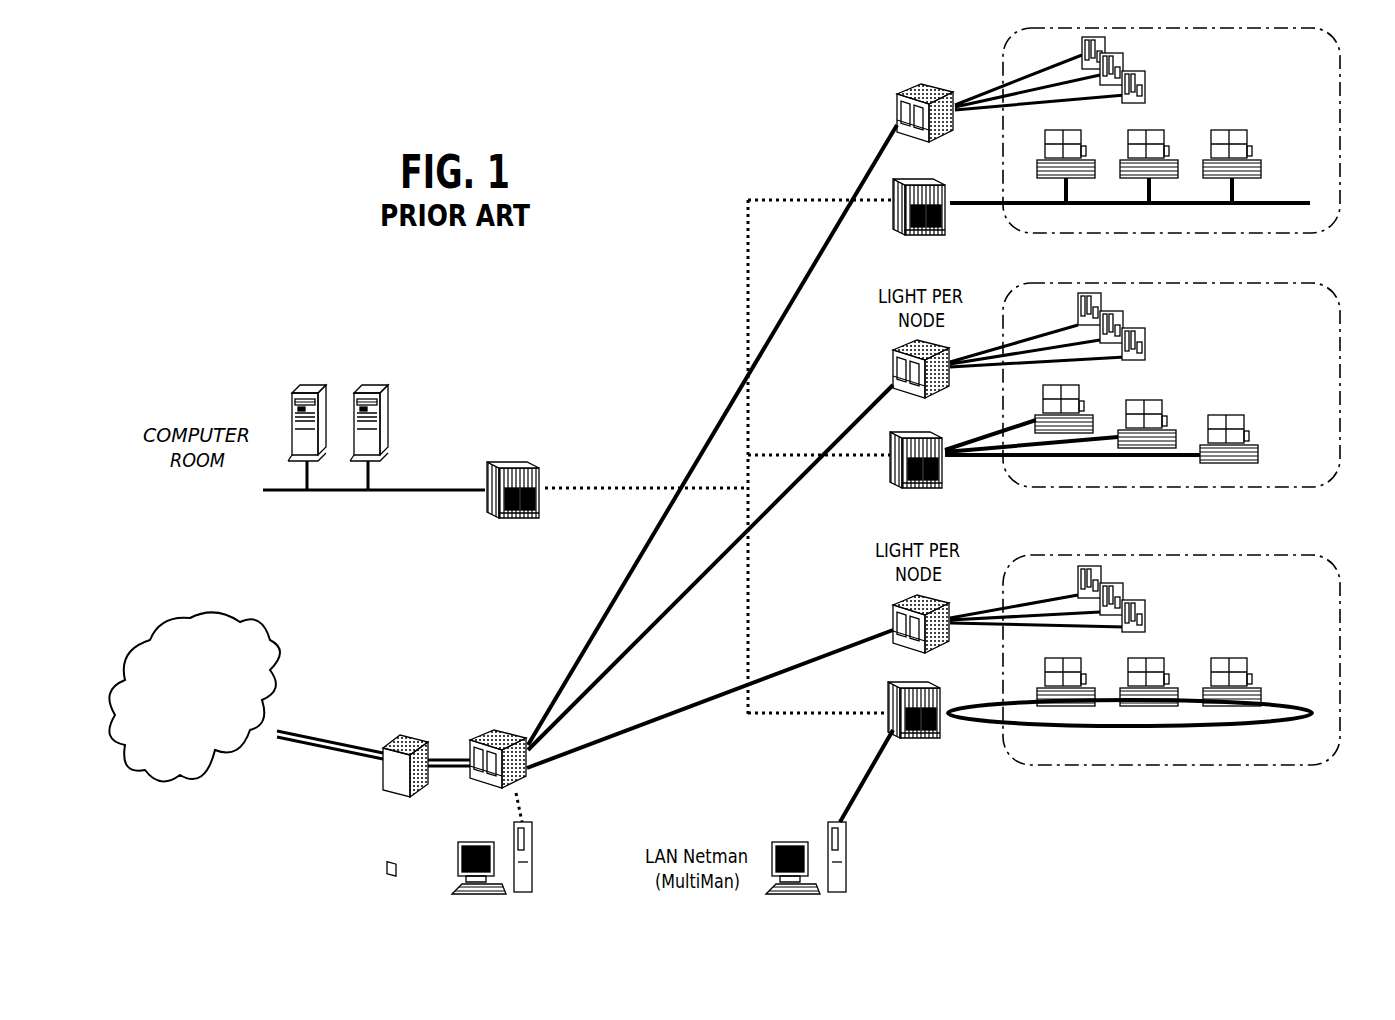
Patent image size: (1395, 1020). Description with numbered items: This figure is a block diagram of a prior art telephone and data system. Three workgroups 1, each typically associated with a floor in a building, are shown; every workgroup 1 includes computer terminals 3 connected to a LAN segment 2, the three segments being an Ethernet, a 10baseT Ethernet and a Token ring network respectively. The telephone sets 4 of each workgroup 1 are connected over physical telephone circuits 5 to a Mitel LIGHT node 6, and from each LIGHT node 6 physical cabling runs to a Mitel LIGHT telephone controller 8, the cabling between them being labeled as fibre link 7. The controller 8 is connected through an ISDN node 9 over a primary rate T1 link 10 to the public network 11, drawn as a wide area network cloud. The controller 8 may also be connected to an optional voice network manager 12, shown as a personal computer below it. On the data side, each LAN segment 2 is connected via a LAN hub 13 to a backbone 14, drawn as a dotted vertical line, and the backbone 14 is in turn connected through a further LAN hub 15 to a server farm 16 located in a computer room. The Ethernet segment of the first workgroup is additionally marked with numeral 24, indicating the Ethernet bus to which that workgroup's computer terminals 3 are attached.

The workgroup 1 is at (1340, 100).
The LAN segment 2 is at (968, 458).
The computer terminal 3 is at (1250, 135).
The telephone set 4 is at (1145, 82).
The physical telephone circuit 5 is at (975, 110).
The LIGHT node 6 is at (897, 100).
The fibre link (16 Mbs) 7 is at (697, 462).
The LIGHT telephone controller 8 is at (488, 778).
The ISDN node 9 is at (385, 782).
The primary rate T1 link 10 is at (307, 732).
The public network 11 is at (210, 635).
The voice network manager 12 is at (525, 860).
The LAN hub 13 is at (893, 195).
The backbone 14 is at (748, 355).
The LAN hub 15 is at (512, 460).
The server farm 16 is at (380, 412).
The Ethernet segment 24 is at (975, 207).